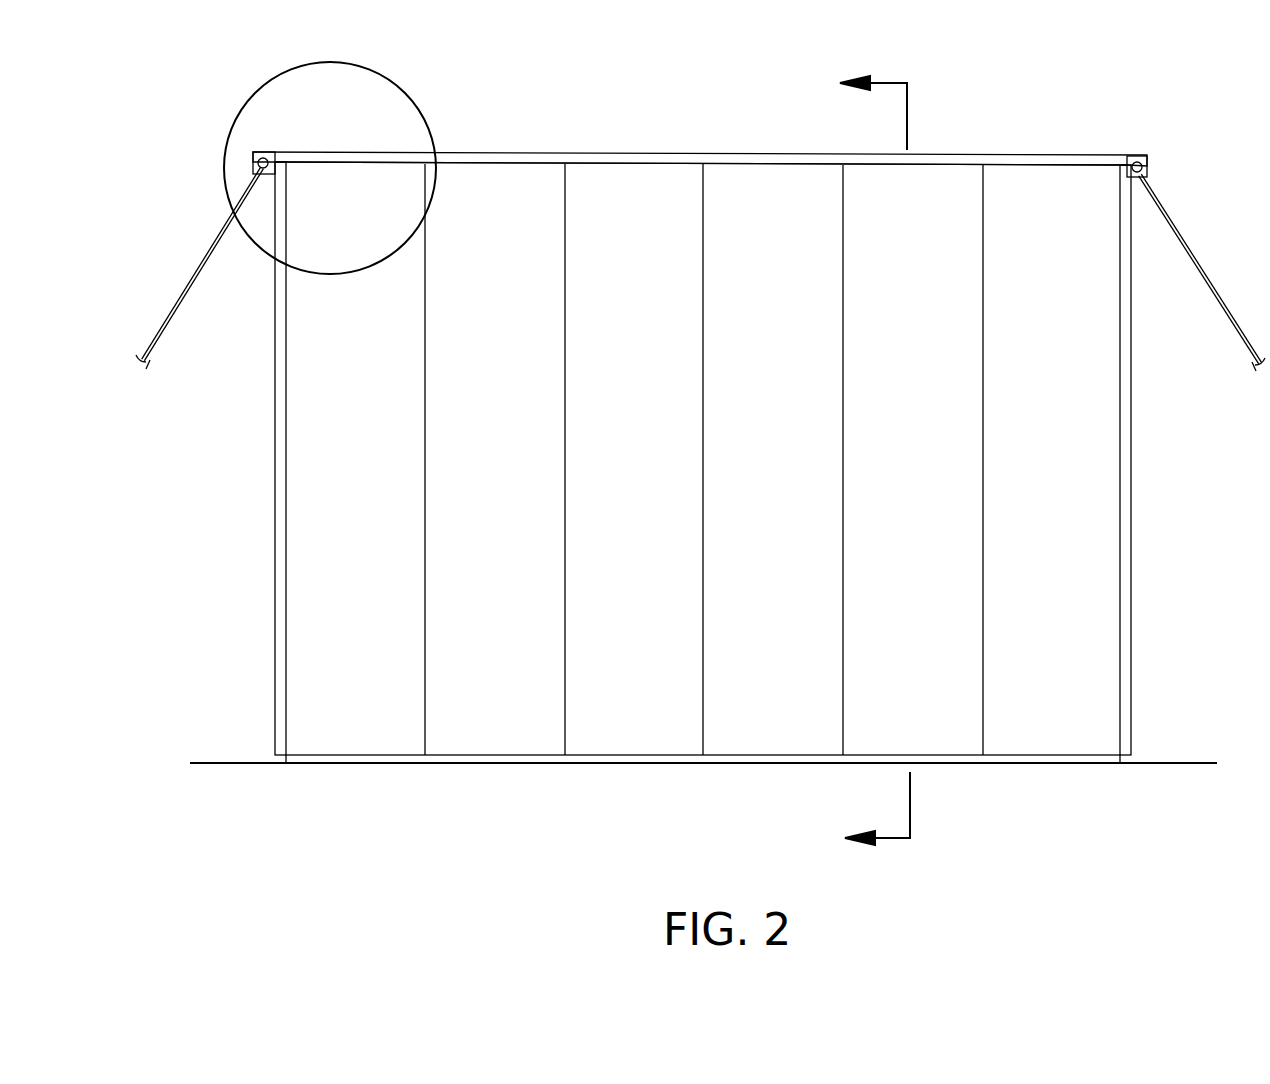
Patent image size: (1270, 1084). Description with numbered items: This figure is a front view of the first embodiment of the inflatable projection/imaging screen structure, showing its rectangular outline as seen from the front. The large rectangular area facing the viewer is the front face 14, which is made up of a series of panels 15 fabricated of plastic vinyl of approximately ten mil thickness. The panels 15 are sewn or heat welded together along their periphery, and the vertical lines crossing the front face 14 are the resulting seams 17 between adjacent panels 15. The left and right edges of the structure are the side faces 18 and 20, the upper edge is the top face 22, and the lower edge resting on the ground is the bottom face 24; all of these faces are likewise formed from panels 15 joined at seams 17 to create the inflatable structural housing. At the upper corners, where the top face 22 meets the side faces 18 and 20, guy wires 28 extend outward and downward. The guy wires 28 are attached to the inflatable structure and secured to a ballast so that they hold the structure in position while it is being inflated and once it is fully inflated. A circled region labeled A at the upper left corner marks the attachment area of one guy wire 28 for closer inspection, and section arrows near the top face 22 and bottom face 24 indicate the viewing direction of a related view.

The front face 14 is at (784, 427).
The panels 15 is at (367, 737).
The seams 17 is at (427, 732).
The side face 18 is at (275, 536).
The side face 20 is at (1131, 504).
The top face 22 is at (678, 154).
The bottom face 24 is at (968, 764).
The guy wires 28 is at (186, 292).
The detail region A is at (419, 103).